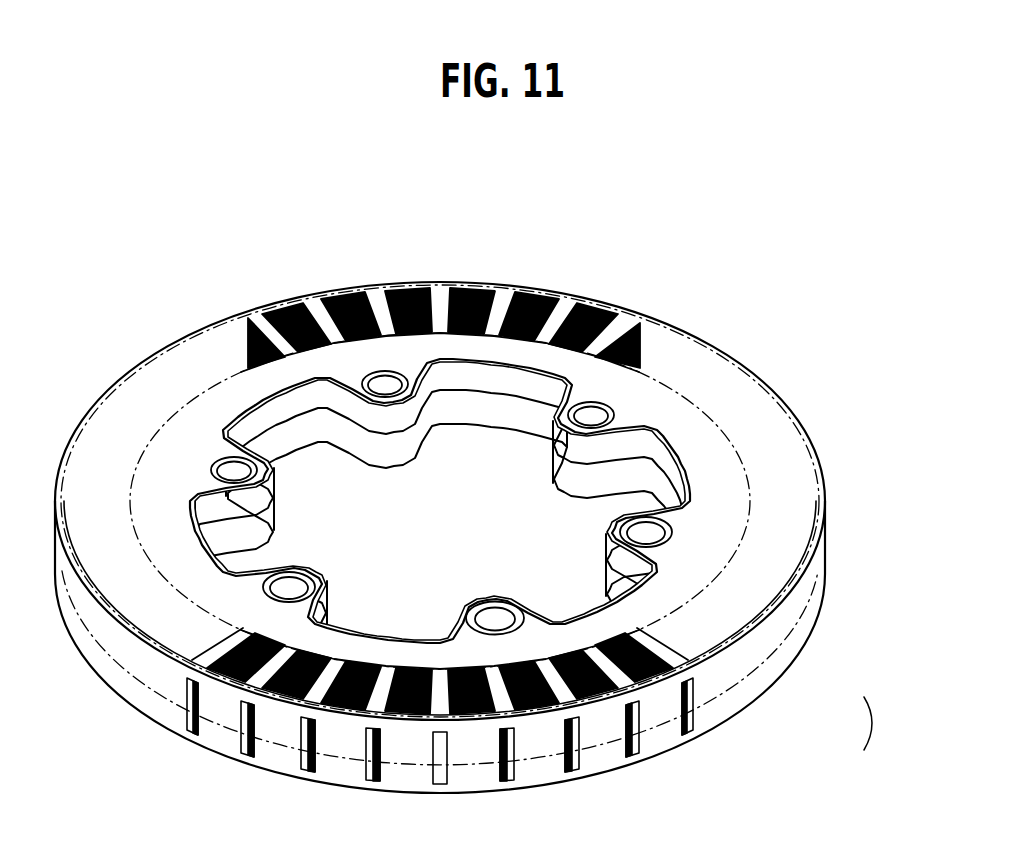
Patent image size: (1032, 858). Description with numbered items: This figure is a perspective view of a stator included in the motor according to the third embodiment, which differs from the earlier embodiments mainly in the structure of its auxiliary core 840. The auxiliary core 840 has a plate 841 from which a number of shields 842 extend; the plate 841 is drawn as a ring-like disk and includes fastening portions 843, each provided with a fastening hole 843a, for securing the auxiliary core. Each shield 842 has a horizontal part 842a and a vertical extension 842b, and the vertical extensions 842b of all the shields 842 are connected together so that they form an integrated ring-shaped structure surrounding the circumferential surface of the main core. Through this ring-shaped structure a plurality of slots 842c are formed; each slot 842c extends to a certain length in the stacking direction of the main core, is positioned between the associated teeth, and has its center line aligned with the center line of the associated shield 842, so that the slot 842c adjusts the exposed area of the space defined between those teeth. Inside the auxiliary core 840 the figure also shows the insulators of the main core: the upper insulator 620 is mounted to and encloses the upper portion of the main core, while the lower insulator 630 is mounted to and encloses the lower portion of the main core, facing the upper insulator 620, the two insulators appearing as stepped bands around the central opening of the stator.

The auxiliary core 840 is at (770, 311).
The plate 841 is at (713, 467).
The shield 842 is at (457, 647).
The upper flange of side wall 842a is at (672, 650).
The vertical extension 842b is at (667, 720).
The slot 842c is at (245, 727).
The fastening portion 843 is at (497, 601).
The fastening hole 843a is at (598, 414).
The upper insulator 620 is at (279, 411).
The lower insulator 630 is at (398, 450).